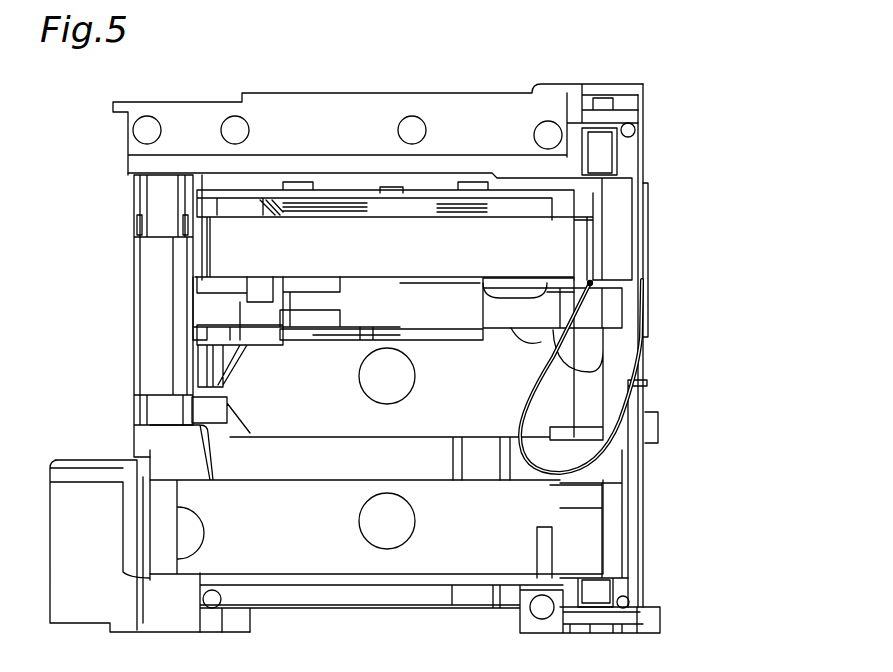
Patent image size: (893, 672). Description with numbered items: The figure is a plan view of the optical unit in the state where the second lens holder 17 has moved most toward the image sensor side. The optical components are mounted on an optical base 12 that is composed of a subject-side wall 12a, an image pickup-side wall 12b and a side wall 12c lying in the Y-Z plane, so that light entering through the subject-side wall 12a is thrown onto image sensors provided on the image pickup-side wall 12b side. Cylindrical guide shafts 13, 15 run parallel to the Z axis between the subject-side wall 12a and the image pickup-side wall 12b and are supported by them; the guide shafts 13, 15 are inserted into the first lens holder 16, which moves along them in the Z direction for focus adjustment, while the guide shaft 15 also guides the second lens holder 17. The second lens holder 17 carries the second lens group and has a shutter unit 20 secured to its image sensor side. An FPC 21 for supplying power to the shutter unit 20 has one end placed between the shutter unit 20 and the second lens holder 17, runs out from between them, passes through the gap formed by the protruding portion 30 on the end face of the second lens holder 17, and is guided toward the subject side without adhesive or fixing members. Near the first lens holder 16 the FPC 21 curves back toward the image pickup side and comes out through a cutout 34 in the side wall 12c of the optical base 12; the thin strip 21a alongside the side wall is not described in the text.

The optical base 12 is at (654, 535).
The subject-side wall 12a is at (390, 605).
The image pickup-side wall 12b is at (243, 93).
The side wall 12c is at (645, 505).
The guide shaft 13 is at (147, 203).
The guide shaft 15 is at (625, 565).
The first lens holder 16 is at (437, 480).
The second lens holder 17 is at (445, 318).
The shutter unit 20 is at (568, 258).
The FPC 21 is at (603, 457).
The spring leaf 21a is at (648, 205).
The protruding portion 30 is at (608, 310).
The cutout 34 is at (645, 383).